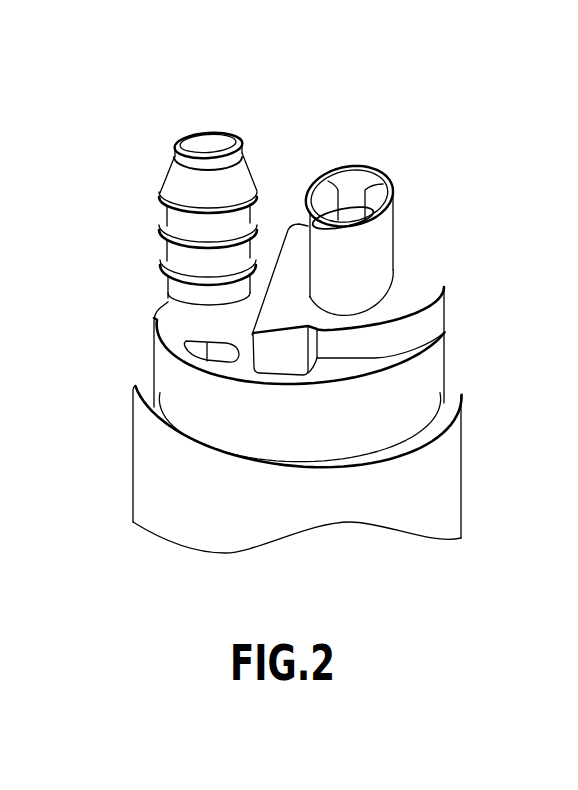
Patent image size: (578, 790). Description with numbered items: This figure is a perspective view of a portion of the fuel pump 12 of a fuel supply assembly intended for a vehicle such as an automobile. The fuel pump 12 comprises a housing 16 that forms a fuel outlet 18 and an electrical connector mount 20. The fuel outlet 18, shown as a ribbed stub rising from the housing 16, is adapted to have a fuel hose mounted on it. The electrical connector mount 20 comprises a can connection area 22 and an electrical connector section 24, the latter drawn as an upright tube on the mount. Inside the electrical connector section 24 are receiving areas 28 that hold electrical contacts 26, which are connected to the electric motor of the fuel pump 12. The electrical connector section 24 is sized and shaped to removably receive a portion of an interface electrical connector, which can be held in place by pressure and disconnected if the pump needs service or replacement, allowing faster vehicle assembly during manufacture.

The fuel pump 12 is at (492, 125).
The housing 16 is at (175, 515).
The fuel outlet 18 is at (180, 178).
The electrical connector mount 20 is at (427, 287).
The can connection area 22 is at (377, 347).
The electrical connector section 24 is at (394, 181).
The electrical contacts 26 is at (362, 252).
The receiving areas 28 is at (338, 218).